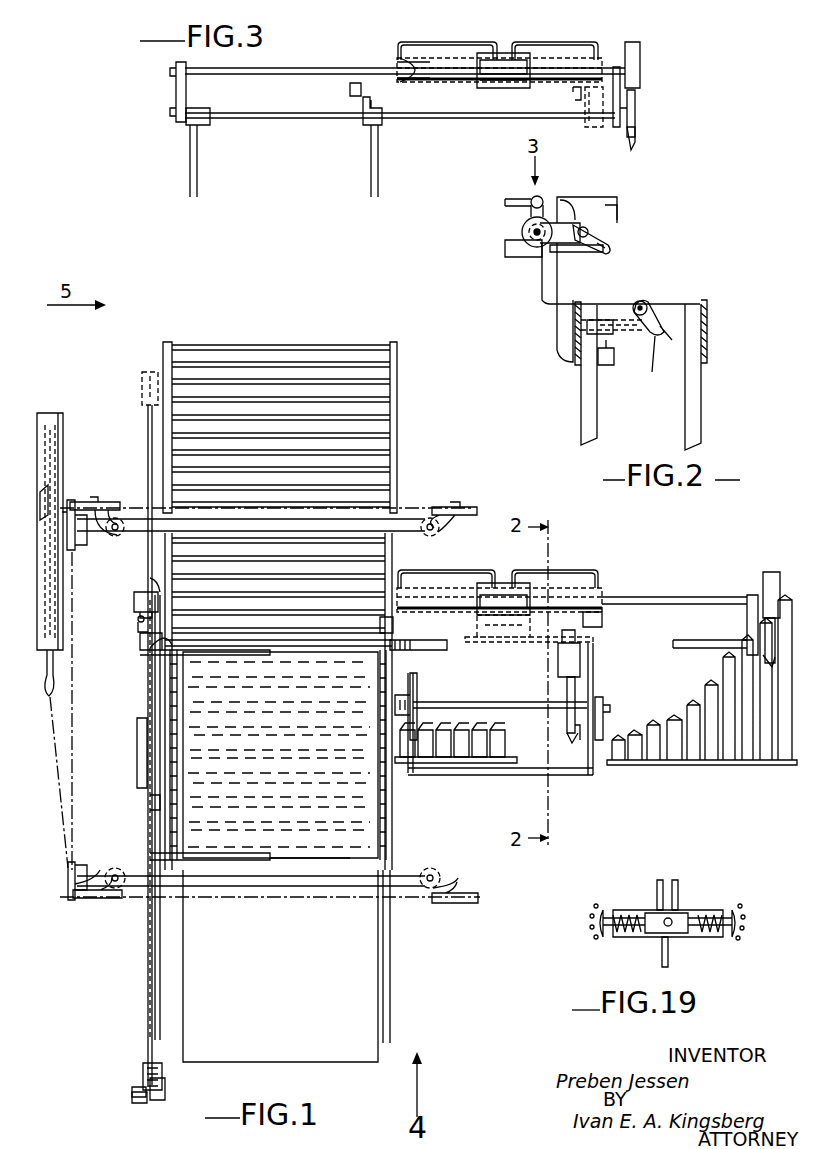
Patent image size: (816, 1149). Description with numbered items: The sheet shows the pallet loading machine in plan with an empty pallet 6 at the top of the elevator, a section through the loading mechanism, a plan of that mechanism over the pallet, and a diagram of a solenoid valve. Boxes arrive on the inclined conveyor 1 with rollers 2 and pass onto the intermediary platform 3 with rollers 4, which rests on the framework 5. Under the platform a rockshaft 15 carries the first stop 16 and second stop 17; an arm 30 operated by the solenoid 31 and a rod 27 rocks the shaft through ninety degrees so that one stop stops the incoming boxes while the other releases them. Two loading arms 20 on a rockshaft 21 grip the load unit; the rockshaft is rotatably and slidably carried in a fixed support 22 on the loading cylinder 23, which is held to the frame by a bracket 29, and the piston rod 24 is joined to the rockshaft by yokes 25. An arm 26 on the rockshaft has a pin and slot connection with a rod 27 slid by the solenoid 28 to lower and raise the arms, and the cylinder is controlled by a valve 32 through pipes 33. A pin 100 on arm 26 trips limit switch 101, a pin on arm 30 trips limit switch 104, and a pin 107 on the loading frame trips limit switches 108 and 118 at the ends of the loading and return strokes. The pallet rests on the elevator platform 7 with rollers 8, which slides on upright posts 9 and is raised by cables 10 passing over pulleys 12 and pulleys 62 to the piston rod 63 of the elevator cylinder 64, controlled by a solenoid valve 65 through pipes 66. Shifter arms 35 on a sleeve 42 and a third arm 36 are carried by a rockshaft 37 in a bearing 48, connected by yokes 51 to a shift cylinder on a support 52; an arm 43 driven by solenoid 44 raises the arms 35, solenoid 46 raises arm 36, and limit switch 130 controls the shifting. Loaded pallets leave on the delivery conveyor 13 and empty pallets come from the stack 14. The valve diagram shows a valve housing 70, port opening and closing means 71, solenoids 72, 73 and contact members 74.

In FIG. 1, the inclined conveyor 1 is at (762, 766).
In FIG. 1, the rollers 2 is at (735, 753).
In FIG. 1, the intermediary platform 3 is at (505, 758).
In FIG. 1, the rollers 4 is at (500, 735).
In FIG. 2, the framework 5 is at (702, 390).
In FIG. 1, the framework 5 is at (507, 635).
In FIG. 1, the pallet 6 is at (312, 855).
In FIG. 1, the elevator platform 7 is at (165, 555).
In FIG. 1, the rollers 8 is at (387, 845).
In FIG. 1, the upright posts 9 is at (433, 537).
In FIG. 1, the cables 10 is at (418, 508).
In FIG. 1, the pulleys 12 is at (99, 500).
In FIG. 1, the inclined delivery conveyor 13 is at (212, 388).
In FIG. 1, the stack of empty pallets 14 is at (286, 857).
In FIG. 2, the rockshaft 15 is at (628, 332).
In FIG. 1, the rockshaft 15 is at (512, 703).
In FIG. 1, the first stop 16 is at (608, 735).
In FIG. 1, the second stop 17 is at (395, 685).
In FIG. 3, the loading arms 20 is at (197, 170).
In FIG. 3, the rockshaft 21 is at (400, 104).
In FIG. 1, the rockshaft 21 is at (440, 628).
In FIG. 3, the fixed support 22 is at (578, 198).
In FIG. 1, the fixed support 22 is at (603, 620).
In FIG. 3, the loading cylinder 23 is at (452, 84).
In FIG. 2, the loading cylinder 23 is at (522, 228).
In FIG. 1, the loading cylinder 23 is at (604, 595).
In FIG. 3, the piston rod 24 is at (420, 84).
In FIG. 2, the piston rod 24 is at (510, 245).
In FIG. 1, the piston rod 24 is at (690, 597).
In FIG. 3, the yokes 25 is at (176, 90).
In FIG. 1, the yokes 25 is at (396, 620).
In FIG. 3, the arm 26 is at (632, 142).
In FIG. 2, the arm 26 is at (606, 238).
In FIG. 1, the arm 26 is at (765, 668).
In FIG. 3, the rod 27 is at (622, 95).
In FIG. 2, the rod 27 is at (593, 253).
In FIG. 1, the rod 27 is at (777, 632).
In FIG. 3, the solenoid 28 is at (642, 50).
In FIG. 2, the solenoid 28 is at (520, 260).
In FIG. 1, the solenoid 28 is at (780, 597).
In FIG. 2, the bracket 29 is at (548, 330).
In FIG. 1, the bracket 29 is at (500, 628).
In FIG. 2, the arm 30 is at (653, 373).
In FIG. 1, the arm 30 is at (573, 745).
In FIG. 2, the solenoid 31 is at (600, 333).
In FIG. 1, the solenoid 31 is at (580, 665).
In FIG. 3, the valve 32 is at (520, 88).
In FIG. 1, the valve 32 is at (505, 582).
In FIG. 3, the pipes 33 is at (498, 39).
In FIG. 1, the pipes 33 is at (594, 572).
In FIG. 1, the shifter arms 35 is at (160, 660).
In FIG. 1, the third shifter arm 36 is at (143, 1065).
In FIG. 1, the rockshaft 37 is at (148, 372).
In FIG. 1, the sleeve 42 is at (148, 808).
In FIG. 1, the arm 43 is at (136, 630).
In FIG. 1, the solenoid 44 is at (134, 600).
In FIG. 1, the solenoid 46 is at (130, 1100).
In FIG. 1, the bearing 48 is at (142, 397).
In FIG. 1, the yokes 51 is at (150, 575).
In FIG. 1, the support 52 is at (137, 752).
In FIG. 1, the pulleys 62 is at (72, 508).
In FIG. 1, the piston rod 63 is at (56, 672).
In FIG. 1, the elevator cylinder 64 is at (50, 413).
In FIG. 1, the solenoid valve 65 is at (50, 488).
In FIG. 1, the pipes 66 is at (54, 455).
In FIG. 19, the valve housing 70 is at (693, 908).
In FIG. 19, the port opening and closing means 71 is at (640, 935).
In FIG. 19, the solenoid 72 is at (624, 912).
In FIG. 19, the solenoid 73 is at (712, 940).
In FIG. 19, the contact members 74 is at (600, 906).
In FIG. 2, the pin 100 is at (587, 207).
In FIG. 2, the limit switch 101 is at (618, 208).
In FIG. 2, the limit switch 104 is at (606, 366).
In FIG. 3, the pin 107 is at (366, 113).
In FIG. 3, the limit switch 108 is at (357, 82).
In FIG. 3, the limit switch 118 is at (577, 100).
In FIG. 2, the limit switch 130 is at (655, 300).